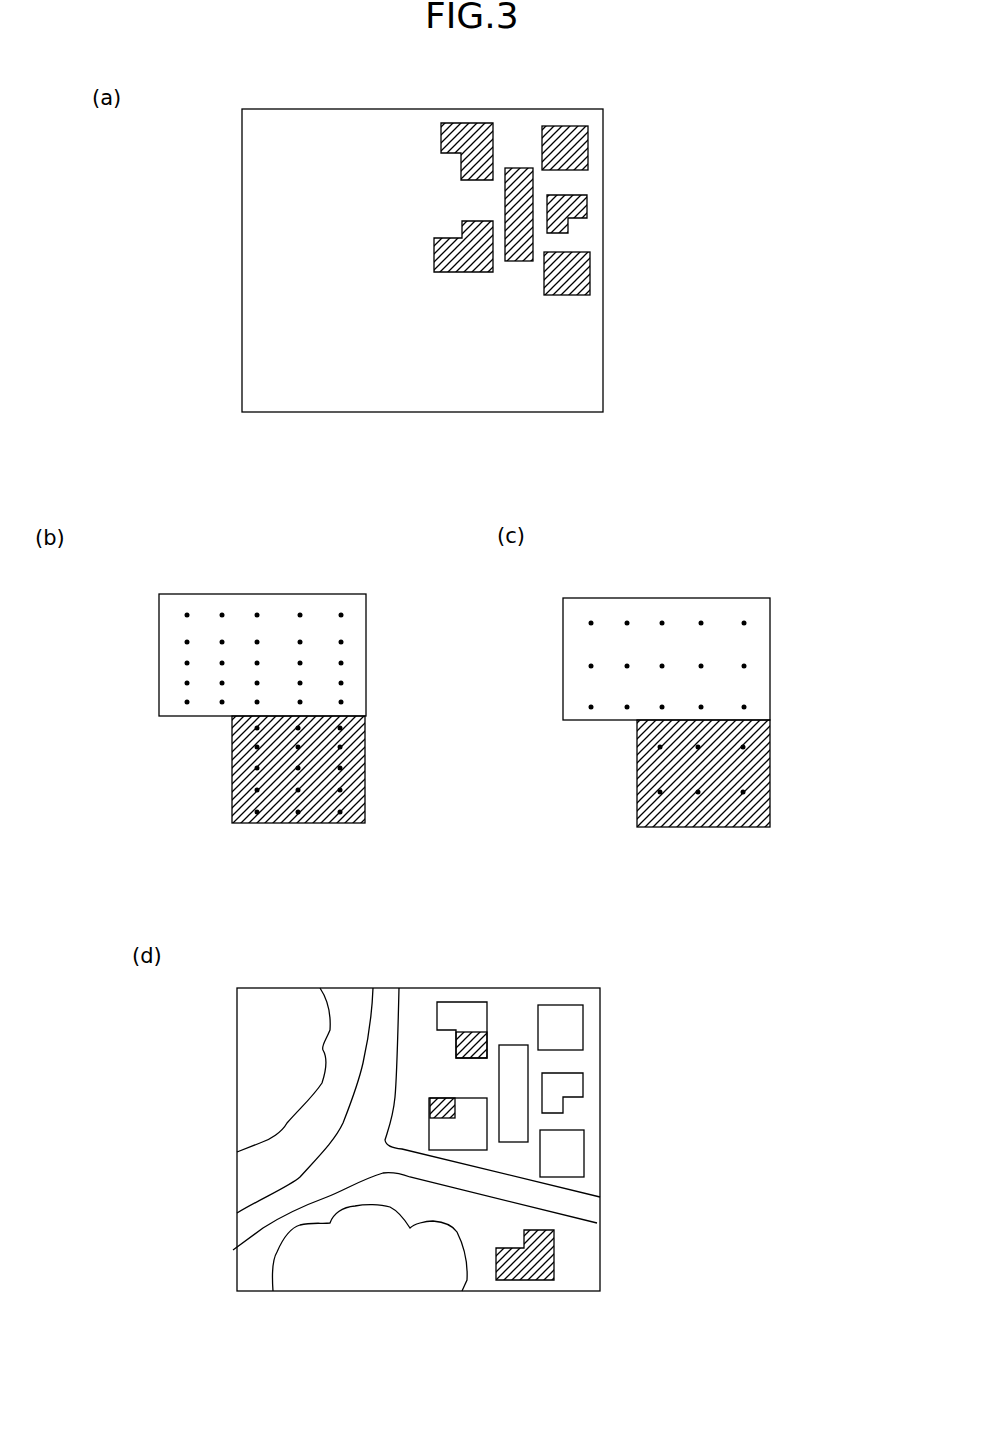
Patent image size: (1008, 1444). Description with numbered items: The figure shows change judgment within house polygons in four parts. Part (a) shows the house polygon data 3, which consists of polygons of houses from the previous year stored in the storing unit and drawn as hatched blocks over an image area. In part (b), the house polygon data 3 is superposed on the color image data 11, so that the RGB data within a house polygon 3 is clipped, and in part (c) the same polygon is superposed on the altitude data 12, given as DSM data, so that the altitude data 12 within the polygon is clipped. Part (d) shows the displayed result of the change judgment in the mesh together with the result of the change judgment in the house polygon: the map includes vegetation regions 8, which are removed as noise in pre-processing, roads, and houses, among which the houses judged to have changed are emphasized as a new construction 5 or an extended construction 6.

The house polygon data 3 is at (470, 122).
The new construction 5 is at (555, 1255).
The extended construction 6 is at (488, 1040).
The vegetation region 8 is at (250, 1056).
The color image data 11 is at (222, 612).
The altitude data 12 is at (591, 620).